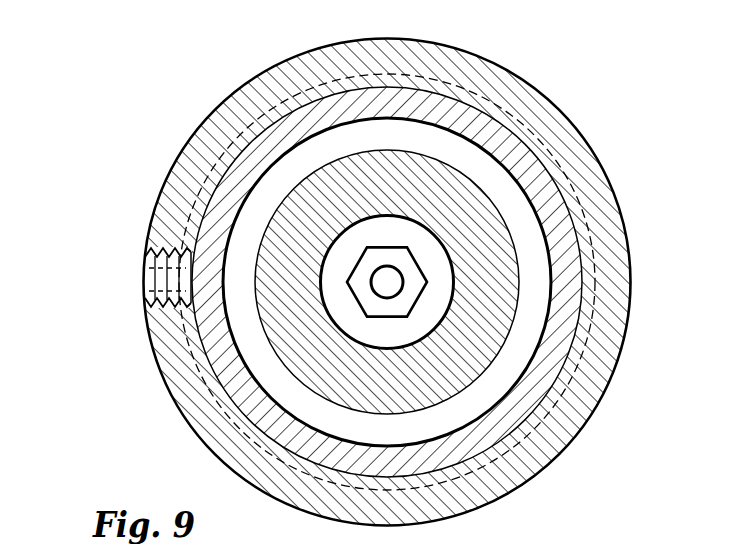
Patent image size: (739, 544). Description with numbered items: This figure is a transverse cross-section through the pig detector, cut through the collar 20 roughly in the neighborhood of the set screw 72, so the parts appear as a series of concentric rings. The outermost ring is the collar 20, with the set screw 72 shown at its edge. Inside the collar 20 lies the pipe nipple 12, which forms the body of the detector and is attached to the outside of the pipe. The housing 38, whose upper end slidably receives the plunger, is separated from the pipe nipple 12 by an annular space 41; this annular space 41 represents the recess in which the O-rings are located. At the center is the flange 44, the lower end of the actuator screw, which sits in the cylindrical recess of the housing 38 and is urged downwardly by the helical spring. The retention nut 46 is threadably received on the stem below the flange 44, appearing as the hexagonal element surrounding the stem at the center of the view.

The pipe nipple 12 is at (480, 120).
The collar 20 is at (557, 133).
The upper housing 38 is at (282, 338).
The annular space 41 is at (257, 207).
The flange 44 is at (388, 282).
The retention nut 46 is at (404, 306).
The set screw 72 is at (147, 280).